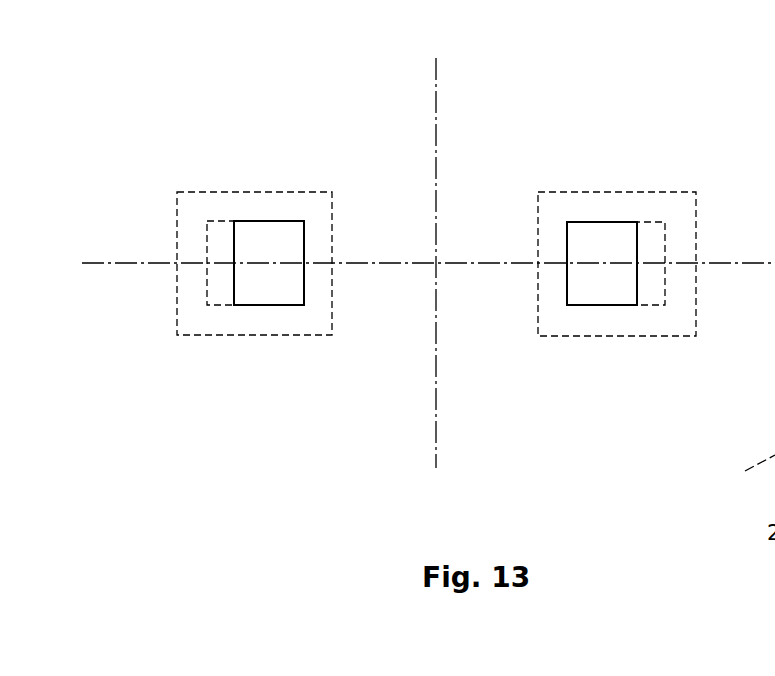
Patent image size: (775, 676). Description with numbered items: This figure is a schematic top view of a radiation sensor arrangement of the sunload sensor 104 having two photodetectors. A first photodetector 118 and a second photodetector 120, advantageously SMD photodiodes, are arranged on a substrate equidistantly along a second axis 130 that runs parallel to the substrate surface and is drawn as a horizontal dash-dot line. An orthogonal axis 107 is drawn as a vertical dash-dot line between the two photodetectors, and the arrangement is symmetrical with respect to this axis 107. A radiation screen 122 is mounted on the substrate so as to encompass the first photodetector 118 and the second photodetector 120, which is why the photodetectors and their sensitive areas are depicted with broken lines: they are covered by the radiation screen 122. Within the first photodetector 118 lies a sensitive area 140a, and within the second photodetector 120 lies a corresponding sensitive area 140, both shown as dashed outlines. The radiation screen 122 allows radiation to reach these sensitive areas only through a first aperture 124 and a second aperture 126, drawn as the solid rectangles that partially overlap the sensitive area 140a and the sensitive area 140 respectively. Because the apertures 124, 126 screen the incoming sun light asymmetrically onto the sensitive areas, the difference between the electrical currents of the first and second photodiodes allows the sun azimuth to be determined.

The sunload sensor 104 is at (531, 43).
The axis 107 is at (437, 404).
The first photodetector 118 is at (253, 192).
The second photodetector 120 is at (618, 192).
The radiation screen 122 is at (509, 160).
The first aperture 124 is at (304, 285).
The second aperture 126 is at (567, 288).
The second axis 130 is at (398, 262).
The sensitive area 140 is at (666, 273).
The sensitive area 140a is at (207, 292).